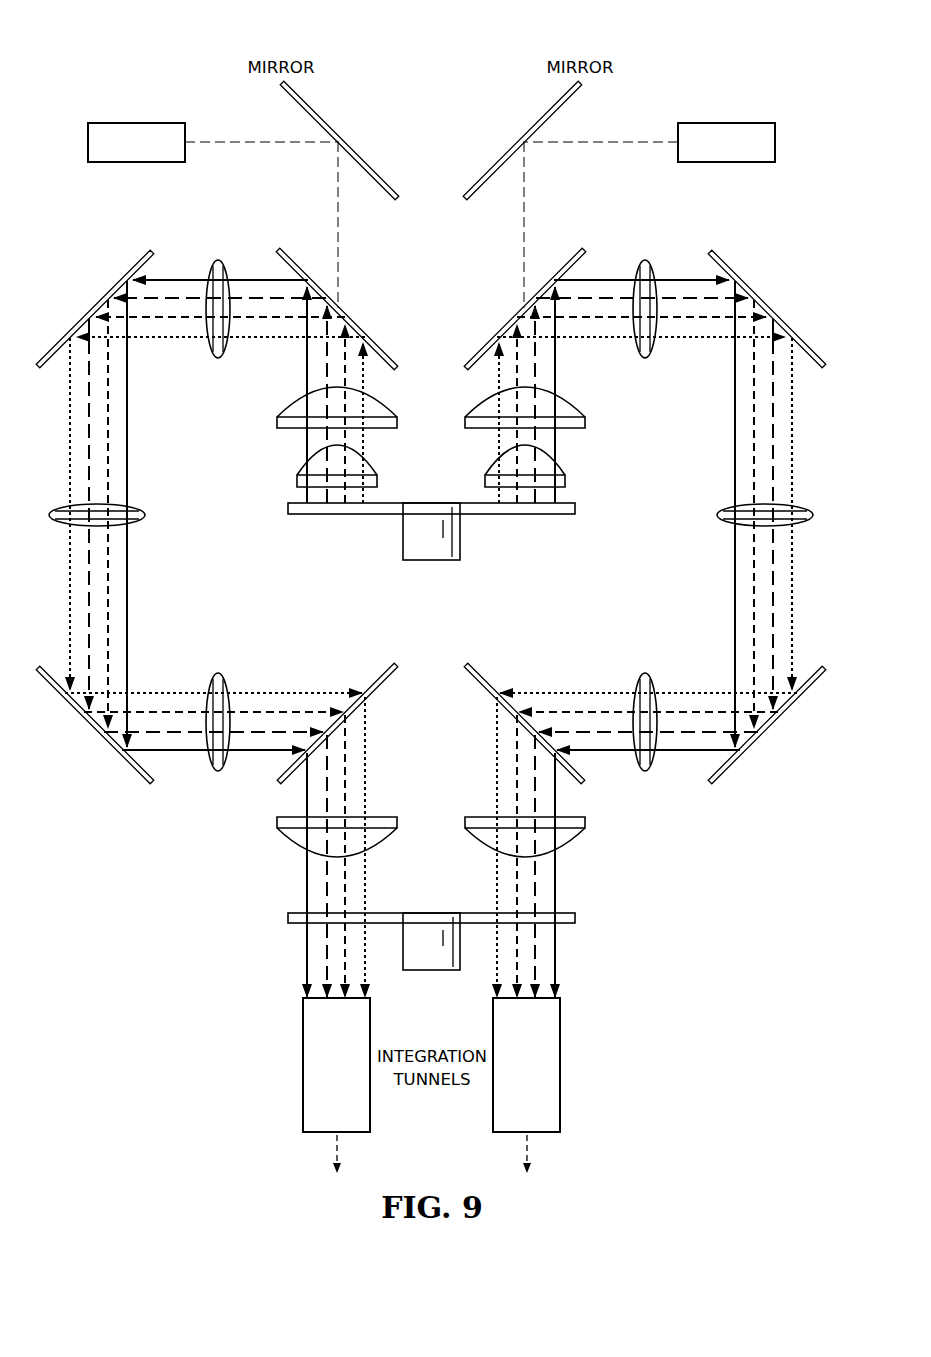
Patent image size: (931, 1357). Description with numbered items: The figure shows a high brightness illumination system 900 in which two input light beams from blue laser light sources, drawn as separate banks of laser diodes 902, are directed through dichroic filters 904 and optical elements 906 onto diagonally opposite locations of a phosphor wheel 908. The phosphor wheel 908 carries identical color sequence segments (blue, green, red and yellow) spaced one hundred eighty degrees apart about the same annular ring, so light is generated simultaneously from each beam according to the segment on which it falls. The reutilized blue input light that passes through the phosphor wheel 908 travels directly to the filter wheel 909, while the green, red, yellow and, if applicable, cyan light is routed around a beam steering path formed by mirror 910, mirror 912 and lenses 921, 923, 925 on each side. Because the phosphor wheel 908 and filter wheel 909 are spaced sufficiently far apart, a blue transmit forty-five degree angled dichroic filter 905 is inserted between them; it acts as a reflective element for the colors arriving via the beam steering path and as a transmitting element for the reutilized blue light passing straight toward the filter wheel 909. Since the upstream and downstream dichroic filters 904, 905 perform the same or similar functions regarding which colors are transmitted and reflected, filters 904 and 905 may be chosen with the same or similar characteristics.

The high brightness illumination system 900 is at (203, 55).
The laser diodes 902 is at (137, 122).
The dichroic filter 904 is at (286, 249).
The blue transmit angled dichroic filter 905 is at (294, 781).
The optical elements 906 is at (260, 423).
The phosphor wheel 908 is at (576, 514).
The filter wheel 909 is at (577, 918).
The mirror 910 is at (144, 254).
The mirror 912 is at (144, 776).
The lens 921 is at (213, 260).
The lens 923 is at (146, 515).
The lens 925 is at (218, 773).